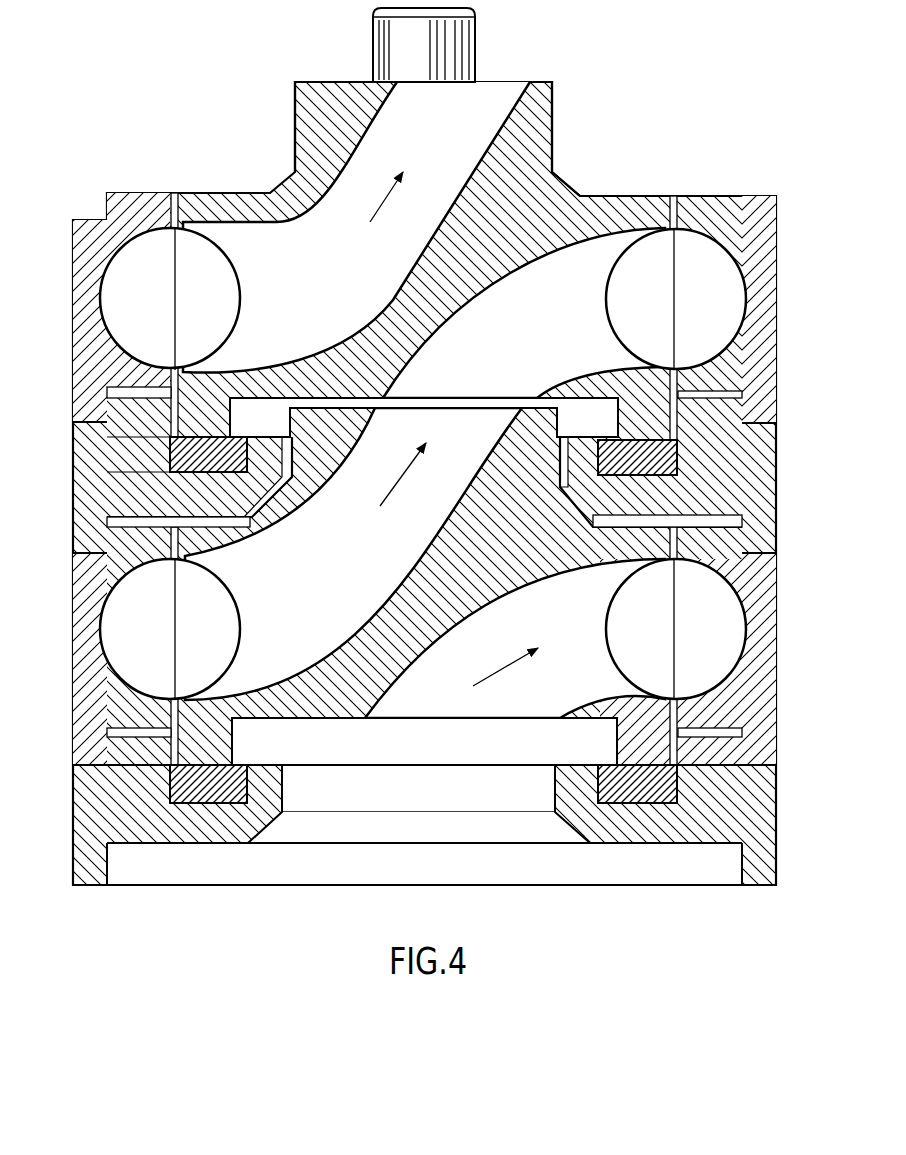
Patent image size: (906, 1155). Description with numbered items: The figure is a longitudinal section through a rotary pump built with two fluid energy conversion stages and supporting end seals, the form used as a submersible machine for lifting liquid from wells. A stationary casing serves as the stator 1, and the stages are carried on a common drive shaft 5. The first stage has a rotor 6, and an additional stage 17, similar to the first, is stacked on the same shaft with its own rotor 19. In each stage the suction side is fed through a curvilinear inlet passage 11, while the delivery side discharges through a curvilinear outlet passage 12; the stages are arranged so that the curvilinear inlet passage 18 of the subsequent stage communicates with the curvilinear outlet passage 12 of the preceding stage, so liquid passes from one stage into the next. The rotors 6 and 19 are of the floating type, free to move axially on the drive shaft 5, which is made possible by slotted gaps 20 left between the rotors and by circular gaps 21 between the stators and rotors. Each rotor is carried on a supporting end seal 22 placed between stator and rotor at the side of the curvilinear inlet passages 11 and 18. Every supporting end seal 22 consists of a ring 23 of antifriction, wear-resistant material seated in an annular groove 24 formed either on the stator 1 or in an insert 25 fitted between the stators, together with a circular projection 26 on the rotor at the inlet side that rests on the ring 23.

The stator 1 is at (86, 300).
The drive shaft 5 is at (388, 38).
The rotor 6 is at (258, 528).
The curvilinear inlet passage 11 is at (509, 698).
The curvilinear outlet passage 12 is at (386, 438).
The additional stage 17 is at (577, 160).
The curvilinear inlet passage 18 is at (505, 297).
The rotor 19 is at (318, 98).
The slotted gap 20 is at (495, 399).
The circular gap 21 is at (176, 531).
The supporting end seal 22 is at (656, 458).
The ring 23 is at (188, 459).
The annular groove 24 is at (242, 451).
The insert 25 is at (755, 507).
The circular projection 26 is at (208, 745).